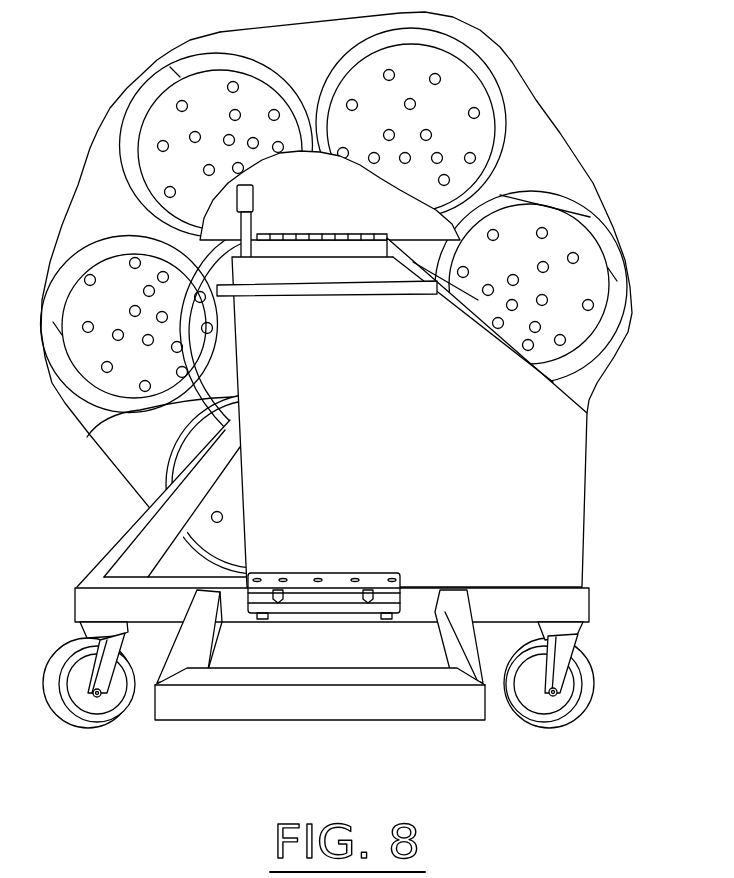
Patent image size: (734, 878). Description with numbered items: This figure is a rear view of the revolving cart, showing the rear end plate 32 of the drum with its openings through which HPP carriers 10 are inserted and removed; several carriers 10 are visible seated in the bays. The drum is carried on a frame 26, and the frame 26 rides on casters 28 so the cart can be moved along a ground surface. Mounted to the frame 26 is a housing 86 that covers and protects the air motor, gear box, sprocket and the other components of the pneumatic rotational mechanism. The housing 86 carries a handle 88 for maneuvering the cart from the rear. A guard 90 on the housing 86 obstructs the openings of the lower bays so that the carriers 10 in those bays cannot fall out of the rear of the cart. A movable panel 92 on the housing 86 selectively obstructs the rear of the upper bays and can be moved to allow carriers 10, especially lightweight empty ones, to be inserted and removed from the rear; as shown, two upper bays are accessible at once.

The HPP carrier 10 is at (118, 311).
The frame 26 is at (292, 708).
The caster 28 is at (100, 710).
The rear end plate 32 is at (539, 143).
The housing 86 is at (472, 432).
The handle 88 is at (360, 293).
The guard 90 is at (87, 437).
The movable panel 92 is at (328, 202).